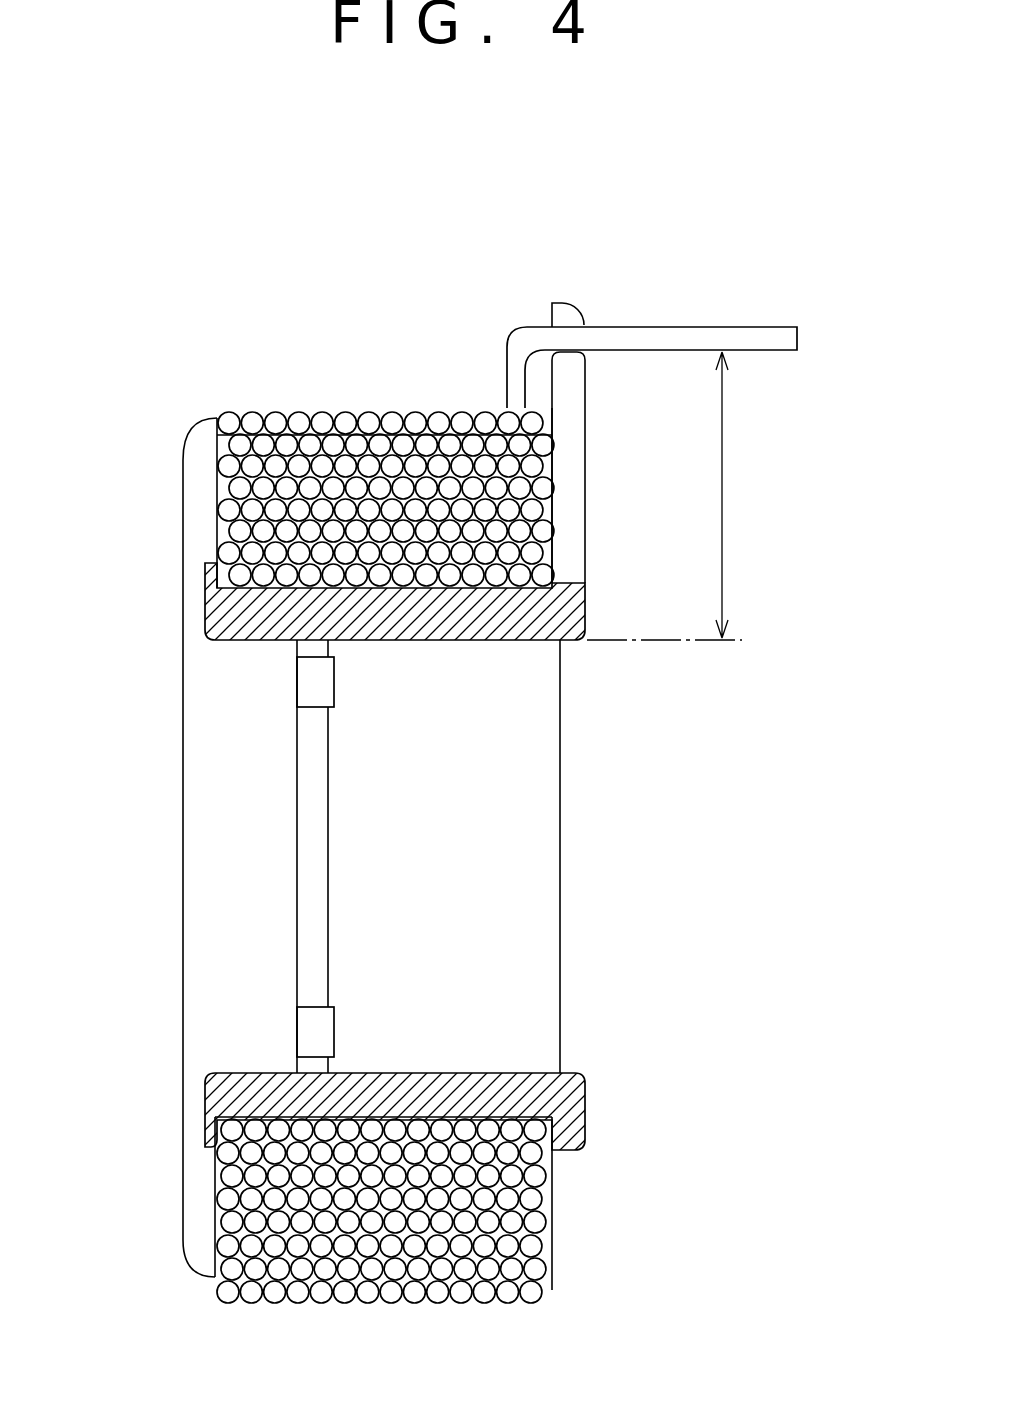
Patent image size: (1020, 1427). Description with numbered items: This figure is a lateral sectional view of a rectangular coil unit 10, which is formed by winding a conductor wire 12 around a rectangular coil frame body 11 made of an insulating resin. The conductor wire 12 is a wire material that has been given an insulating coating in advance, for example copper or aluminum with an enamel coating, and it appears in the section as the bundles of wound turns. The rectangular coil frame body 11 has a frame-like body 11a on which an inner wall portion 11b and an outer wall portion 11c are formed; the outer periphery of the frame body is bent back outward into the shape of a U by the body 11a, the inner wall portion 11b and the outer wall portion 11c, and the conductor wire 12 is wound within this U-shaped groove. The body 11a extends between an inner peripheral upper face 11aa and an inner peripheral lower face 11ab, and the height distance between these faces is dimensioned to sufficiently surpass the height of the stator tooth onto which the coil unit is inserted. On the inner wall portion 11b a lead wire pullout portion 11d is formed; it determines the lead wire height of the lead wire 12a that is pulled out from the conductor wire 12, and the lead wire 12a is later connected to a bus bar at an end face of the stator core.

The rectangular coil unit 10 is at (742, 81).
The rectangular coil frame body 11 is at (557, 620).
The body 11a is at (473, 624).
The inner peripheral upper face 11aa is at (433, 642).
The inner peripheral lower face 11ab is at (515, 1073).
The inner wall portion 11b is at (573, 433).
The outer wall portion 11c is at (193, 508).
The lead wire pullout portion 11d is at (575, 318).
The conductor wire 12 is at (370, 408).
The lead wire 12a is at (765, 343).